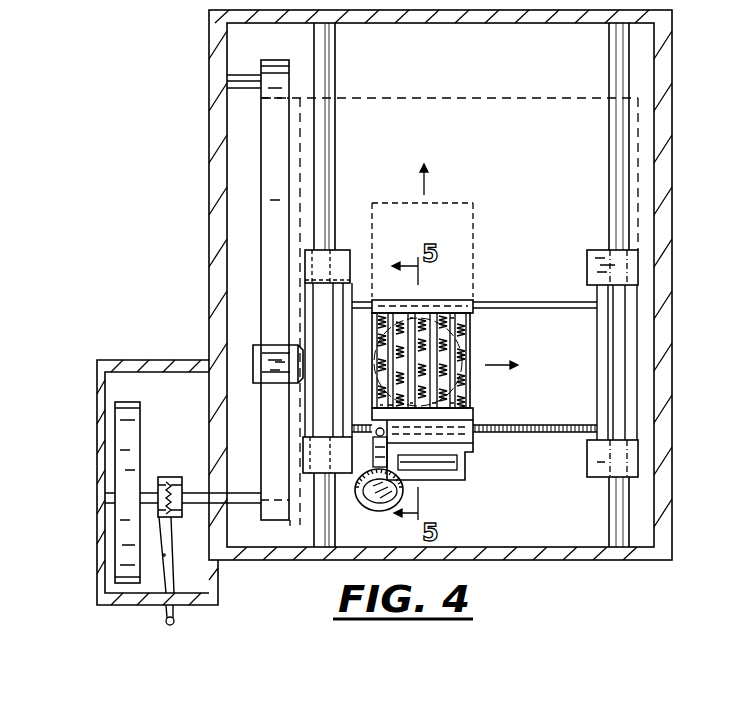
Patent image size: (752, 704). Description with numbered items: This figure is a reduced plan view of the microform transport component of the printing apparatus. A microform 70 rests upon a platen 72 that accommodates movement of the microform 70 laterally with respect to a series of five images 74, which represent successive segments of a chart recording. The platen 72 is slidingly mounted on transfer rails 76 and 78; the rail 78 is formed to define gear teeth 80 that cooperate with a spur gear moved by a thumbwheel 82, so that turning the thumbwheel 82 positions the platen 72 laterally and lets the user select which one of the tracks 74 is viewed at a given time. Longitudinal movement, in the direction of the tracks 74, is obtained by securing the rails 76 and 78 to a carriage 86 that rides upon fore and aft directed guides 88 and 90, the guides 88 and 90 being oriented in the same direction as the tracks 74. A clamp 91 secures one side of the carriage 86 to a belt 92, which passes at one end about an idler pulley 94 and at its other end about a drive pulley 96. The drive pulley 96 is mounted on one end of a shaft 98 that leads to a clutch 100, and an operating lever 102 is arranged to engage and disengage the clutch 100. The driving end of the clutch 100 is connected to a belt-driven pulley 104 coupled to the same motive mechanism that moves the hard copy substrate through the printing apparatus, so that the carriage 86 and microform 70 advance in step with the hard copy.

The microform 70 is at (473, 334).
The platen 72 is at (440, 300).
The images 74 is at (463, 386).
The transfer rail 76 is at (563, 281).
The transfer rail 78 is at (556, 437).
The gear teeth 80 is at (497, 437).
The thumbwheel 82 is at (378, 509).
The carriage 86 is at (345, 249).
The guide 88 is at (328, 137).
The guide 90 is at (612, 153).
The clamp 91 is at (253, 347).
The belt 92 is at (262, 186).
The idler pulley 94 is at (294, 74).
The drive pulley 96 is at (290, 530).
The shaft 98 is at (242, 491).
The clutch 100 is at (178, 477).
The operating lever 102 is at (176, 621).
The belt-driven pulley 104 is at (117, 563).